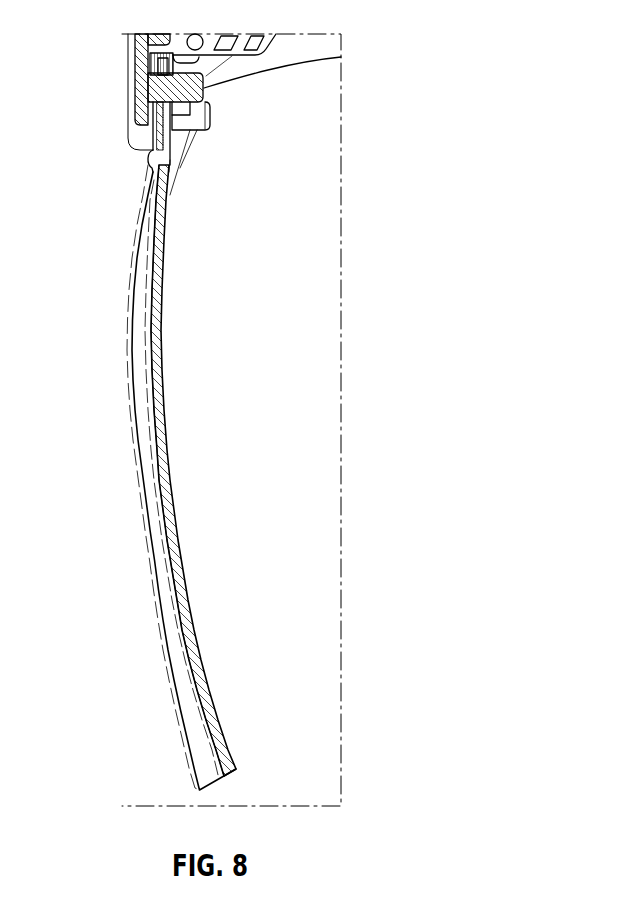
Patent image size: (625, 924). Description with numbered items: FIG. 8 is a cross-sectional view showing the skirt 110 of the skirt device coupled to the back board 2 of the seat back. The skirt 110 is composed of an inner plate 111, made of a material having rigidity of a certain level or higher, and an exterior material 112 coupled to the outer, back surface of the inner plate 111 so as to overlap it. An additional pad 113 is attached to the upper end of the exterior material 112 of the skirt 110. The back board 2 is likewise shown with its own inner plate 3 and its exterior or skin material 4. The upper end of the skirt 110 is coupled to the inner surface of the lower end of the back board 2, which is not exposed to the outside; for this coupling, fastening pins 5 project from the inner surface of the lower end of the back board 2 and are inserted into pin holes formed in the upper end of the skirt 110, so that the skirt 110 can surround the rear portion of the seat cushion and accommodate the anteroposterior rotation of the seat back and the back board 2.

The back board 2 is at (328, 45).
The inner plate of the back board 3 is at (139, 47).
The exterior material of the back board 4 is at (133, 120).
The fastening pin 5 is at (206, 84).
The skirt 110 is at (198, 462).
The inner plate 111 is at (157, 340).
The exterior material 112 is at (135, 445).
The additional pad 113 is at (155, 135).